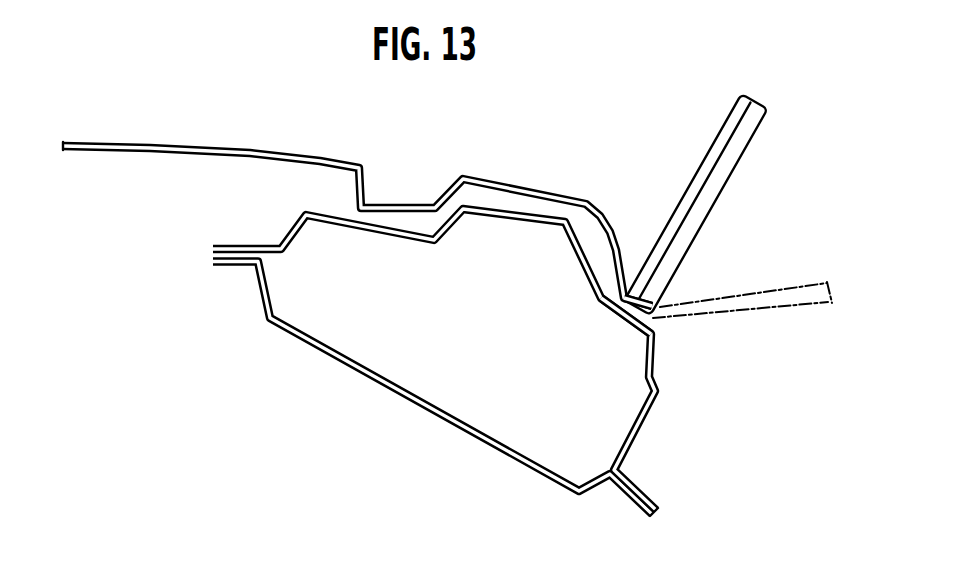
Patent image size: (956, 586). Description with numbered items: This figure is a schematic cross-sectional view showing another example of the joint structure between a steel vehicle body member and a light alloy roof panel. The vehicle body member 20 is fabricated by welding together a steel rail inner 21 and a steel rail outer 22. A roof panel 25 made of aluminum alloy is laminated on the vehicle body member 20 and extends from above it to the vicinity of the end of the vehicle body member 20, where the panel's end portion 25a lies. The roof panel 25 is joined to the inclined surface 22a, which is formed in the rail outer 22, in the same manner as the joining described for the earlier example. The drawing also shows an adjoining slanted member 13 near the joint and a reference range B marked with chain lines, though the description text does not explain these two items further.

The rod member 13 is at (723, 152).
The vehicle body member 20 is at (435, 362).
The rail inner 21 is at (347, 360).
The rail outer 22 is at (513, 218).
The inclined surface 22a is at (633, 310).
The roof panel 25 is at (205, 143).
The panel end portion 25a is at (647, 303).
The swing range B is at (792, 307).